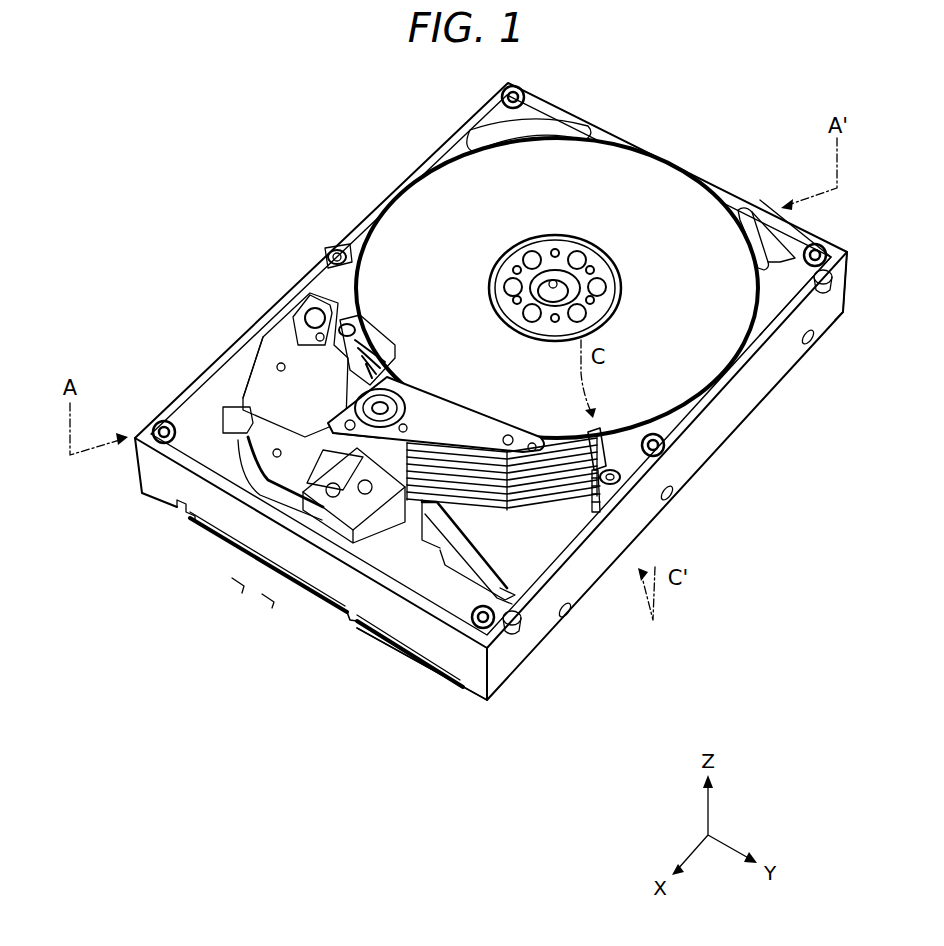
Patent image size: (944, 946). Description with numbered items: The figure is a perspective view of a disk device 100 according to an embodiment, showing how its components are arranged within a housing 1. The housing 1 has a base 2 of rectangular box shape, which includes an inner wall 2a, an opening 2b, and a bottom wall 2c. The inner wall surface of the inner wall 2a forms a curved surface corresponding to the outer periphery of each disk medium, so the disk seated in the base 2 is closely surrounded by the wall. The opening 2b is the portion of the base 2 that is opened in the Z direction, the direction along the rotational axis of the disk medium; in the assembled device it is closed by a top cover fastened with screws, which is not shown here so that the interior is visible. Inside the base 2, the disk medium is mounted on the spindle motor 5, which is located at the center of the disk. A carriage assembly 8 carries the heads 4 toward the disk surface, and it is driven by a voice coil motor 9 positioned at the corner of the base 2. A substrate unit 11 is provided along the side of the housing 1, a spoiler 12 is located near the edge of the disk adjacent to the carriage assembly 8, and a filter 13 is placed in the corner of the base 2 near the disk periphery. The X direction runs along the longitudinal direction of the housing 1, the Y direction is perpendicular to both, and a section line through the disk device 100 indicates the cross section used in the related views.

The housing 1 is at (808, 474).
The base 2 is at (720, 430).
The inner wall 2a is at (690, 463).
The opening 2b is at (552, 532).
The bottom wall 2c is at (393, 550).
The head 4 is at (632, 470).
The spindle motor 5 is at (557, 283).
The carriage assembly 8 is at (438, 413).
The voice coil motor 9 is at (298, 358).
The substrate unit 11 is at (358, 444).
The spoiler 12 is at (378, 343).
The filter 13 is at (747, 212).
The disk device 100 is at (395, 781).